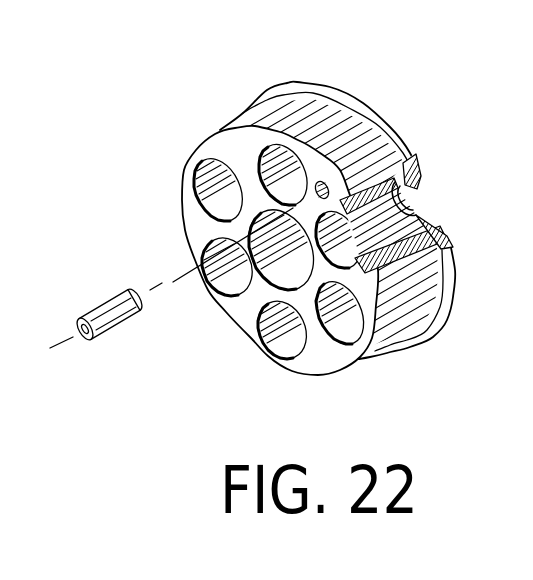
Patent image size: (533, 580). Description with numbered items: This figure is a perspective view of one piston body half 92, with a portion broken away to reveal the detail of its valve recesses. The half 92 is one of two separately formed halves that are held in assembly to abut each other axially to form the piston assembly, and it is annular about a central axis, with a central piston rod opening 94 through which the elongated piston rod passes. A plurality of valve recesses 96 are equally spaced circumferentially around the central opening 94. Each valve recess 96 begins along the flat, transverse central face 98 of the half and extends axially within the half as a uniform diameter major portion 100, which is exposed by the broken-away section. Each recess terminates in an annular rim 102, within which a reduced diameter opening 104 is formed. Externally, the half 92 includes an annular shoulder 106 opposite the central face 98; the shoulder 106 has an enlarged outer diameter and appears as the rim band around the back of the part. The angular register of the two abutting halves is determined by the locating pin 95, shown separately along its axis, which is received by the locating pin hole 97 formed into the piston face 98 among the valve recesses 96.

The piston body half 92 is at (403, 137).
The central piston rod opening 94 is at (270, 268).
The locating pin 95 is at (97, 315).
The valve recesses 96 is at (275, 182).
The locating pin hole 97 is at (320, 187).
The central face 98 is at (247, 322).
The major portion 100 is at (355, 246).
The annular rim 102 is at (400, 213).
The reduced diameter opening 104 is at (405, 197).
The external annular shoulder 106 is at (337, 97).